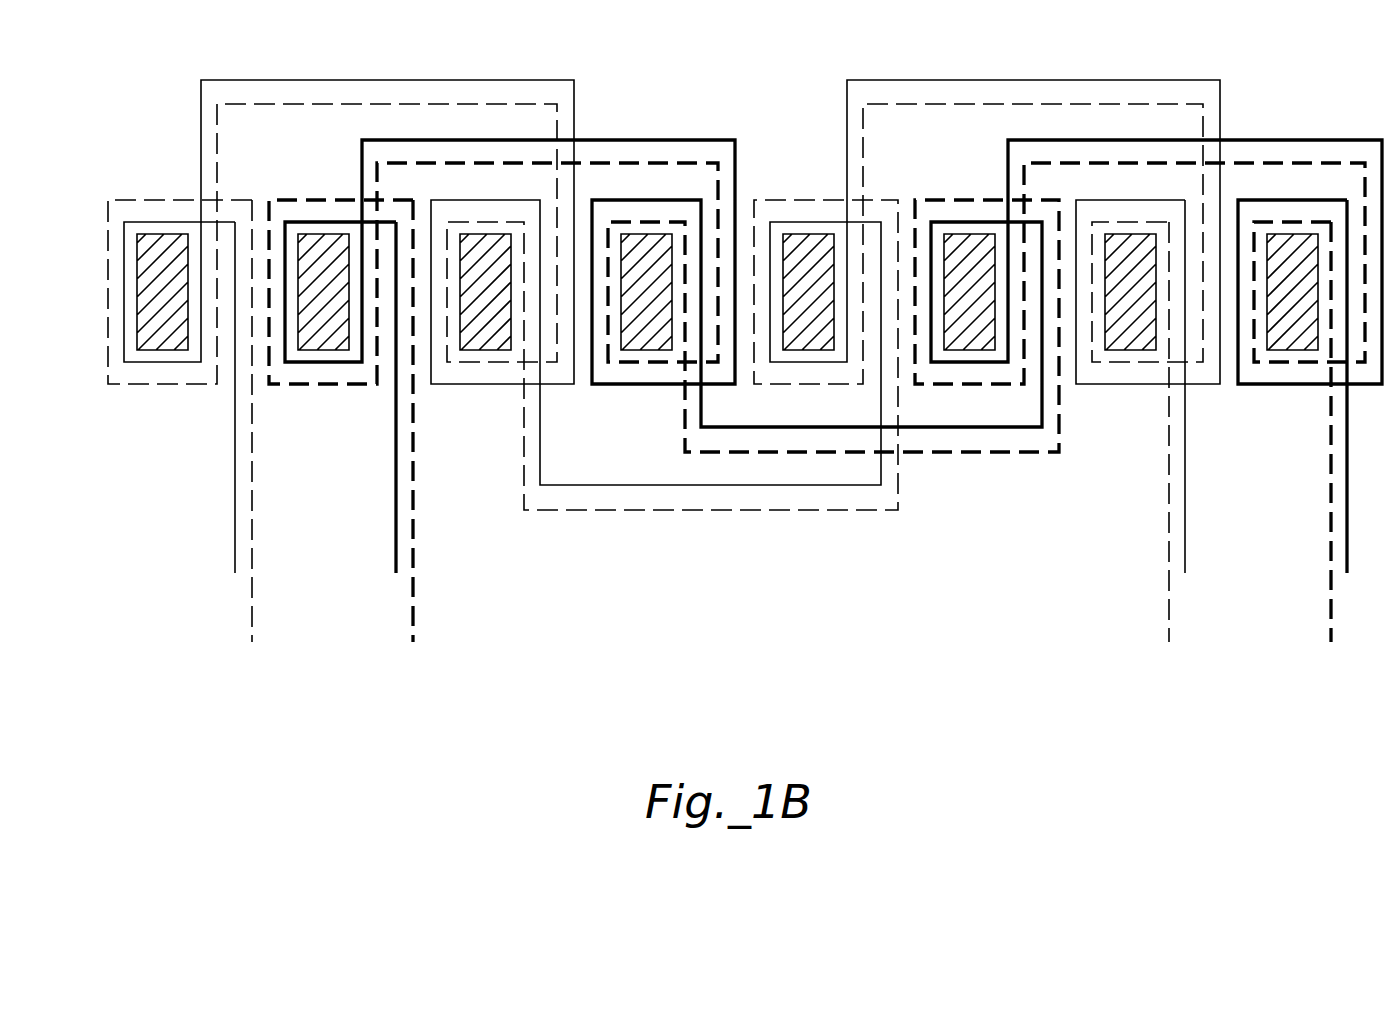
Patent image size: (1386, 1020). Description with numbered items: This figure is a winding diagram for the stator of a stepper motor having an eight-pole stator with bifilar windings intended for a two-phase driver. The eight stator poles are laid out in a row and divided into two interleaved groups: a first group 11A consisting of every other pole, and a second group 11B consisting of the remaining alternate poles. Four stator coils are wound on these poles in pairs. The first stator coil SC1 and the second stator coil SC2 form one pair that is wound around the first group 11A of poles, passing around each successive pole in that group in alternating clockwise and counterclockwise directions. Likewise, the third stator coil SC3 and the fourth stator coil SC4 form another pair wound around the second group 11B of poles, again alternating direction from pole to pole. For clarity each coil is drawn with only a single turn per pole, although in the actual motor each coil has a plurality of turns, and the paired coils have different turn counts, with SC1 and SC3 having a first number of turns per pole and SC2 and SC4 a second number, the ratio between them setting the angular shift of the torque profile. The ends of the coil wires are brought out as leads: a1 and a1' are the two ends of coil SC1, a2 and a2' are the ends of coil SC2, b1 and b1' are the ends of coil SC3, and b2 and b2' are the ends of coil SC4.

The first group of stator poles 11A is at (160, 233).
The second group of stator poles 11B is at (321, 233).
The first stator coil SC1 is at (672, 319).
The second stator coil SC2 is at (655, 355).
The third stator coil SC3 is at (833, 348).
The fourth stator coil SC4 is at (817, 384).
The stator coil wire end a1 is at (234, 414).
The stator coil wire end a2 is at (253, 439).
The stator coil wire end b1 is at (396, 414).
The stator coil wire end b2 is at (415, 439).
The stator coil wire end a1' is at (1189, 402).
The stator coil wire end a2' is at (1167, 450).
The stator coil wire end b1' is at (1350, 402).
The stator coil wire end b2' is at (1331, 450).